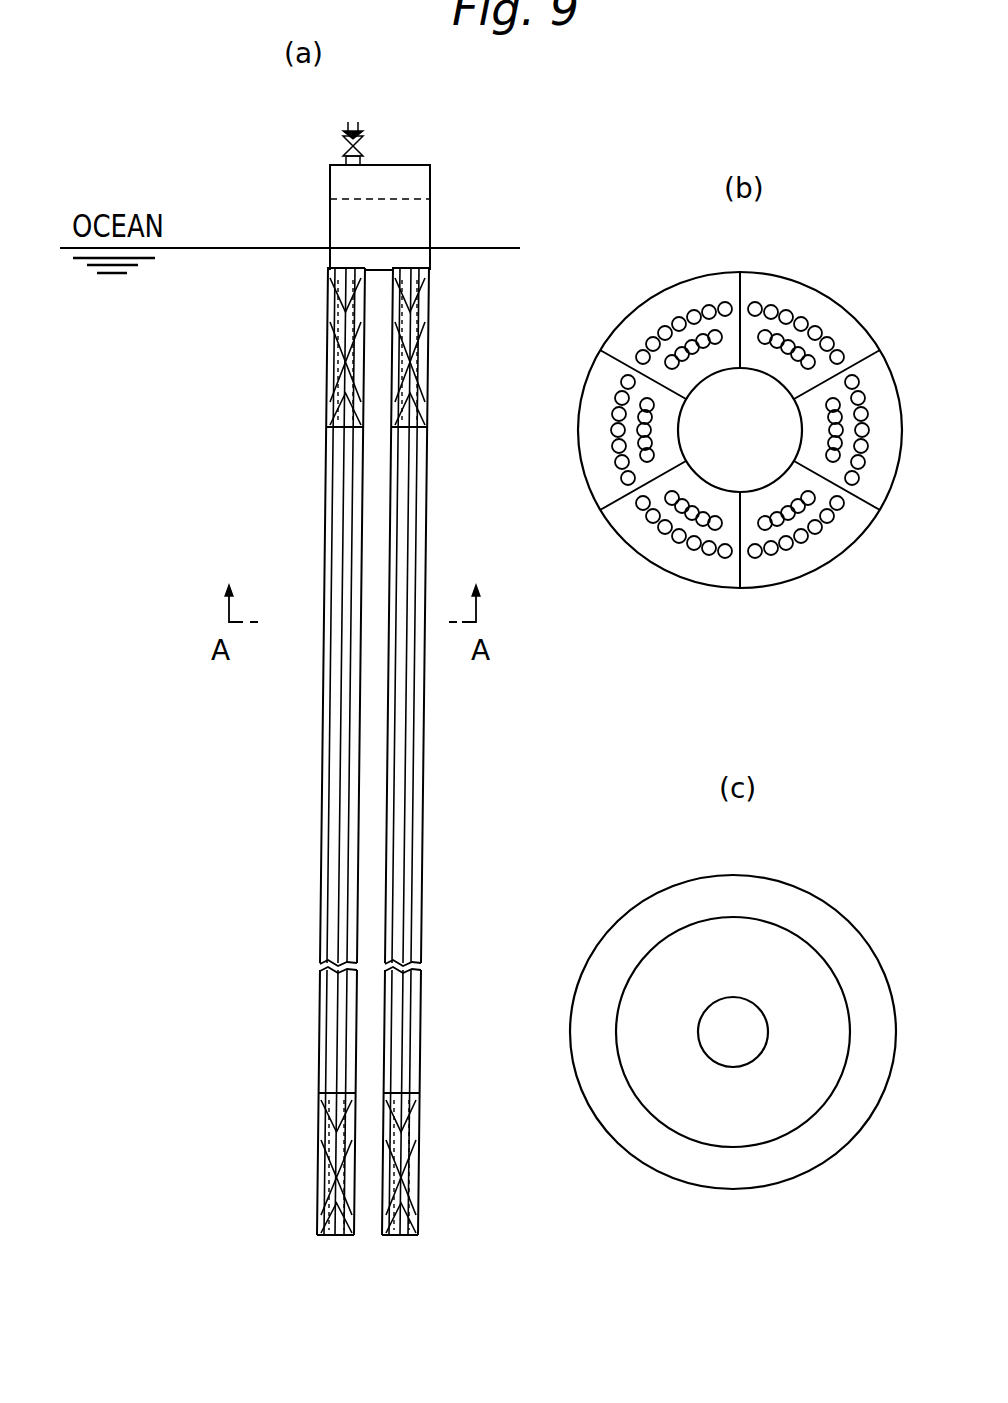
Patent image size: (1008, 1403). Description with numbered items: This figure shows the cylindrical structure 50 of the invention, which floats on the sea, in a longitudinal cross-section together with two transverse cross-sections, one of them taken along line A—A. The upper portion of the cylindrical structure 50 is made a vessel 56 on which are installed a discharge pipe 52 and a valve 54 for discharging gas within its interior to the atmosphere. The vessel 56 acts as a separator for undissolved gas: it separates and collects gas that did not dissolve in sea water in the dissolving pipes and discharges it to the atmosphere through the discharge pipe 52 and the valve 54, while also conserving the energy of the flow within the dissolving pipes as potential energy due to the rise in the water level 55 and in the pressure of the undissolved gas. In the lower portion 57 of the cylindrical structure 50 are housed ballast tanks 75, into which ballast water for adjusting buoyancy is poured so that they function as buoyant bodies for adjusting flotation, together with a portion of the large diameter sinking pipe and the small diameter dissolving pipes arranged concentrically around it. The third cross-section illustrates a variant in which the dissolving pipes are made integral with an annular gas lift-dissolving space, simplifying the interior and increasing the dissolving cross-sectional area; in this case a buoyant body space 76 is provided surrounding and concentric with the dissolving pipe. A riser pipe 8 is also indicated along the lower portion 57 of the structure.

The riser pipe 8 is at (330, 549).
The cylindrical structure 50 is at (462, 217).
The discharge pipe 52 is at (346, 159).
The valve 54 is at (366, 148).
The water level 55 is at (330, 190).
The vessel 56 is at (398, 243).
The lower portion 57 is at (444, 767).
The ballast tank 75 is at (337, 357).
The buoyant body space 76 is at (813, 933).